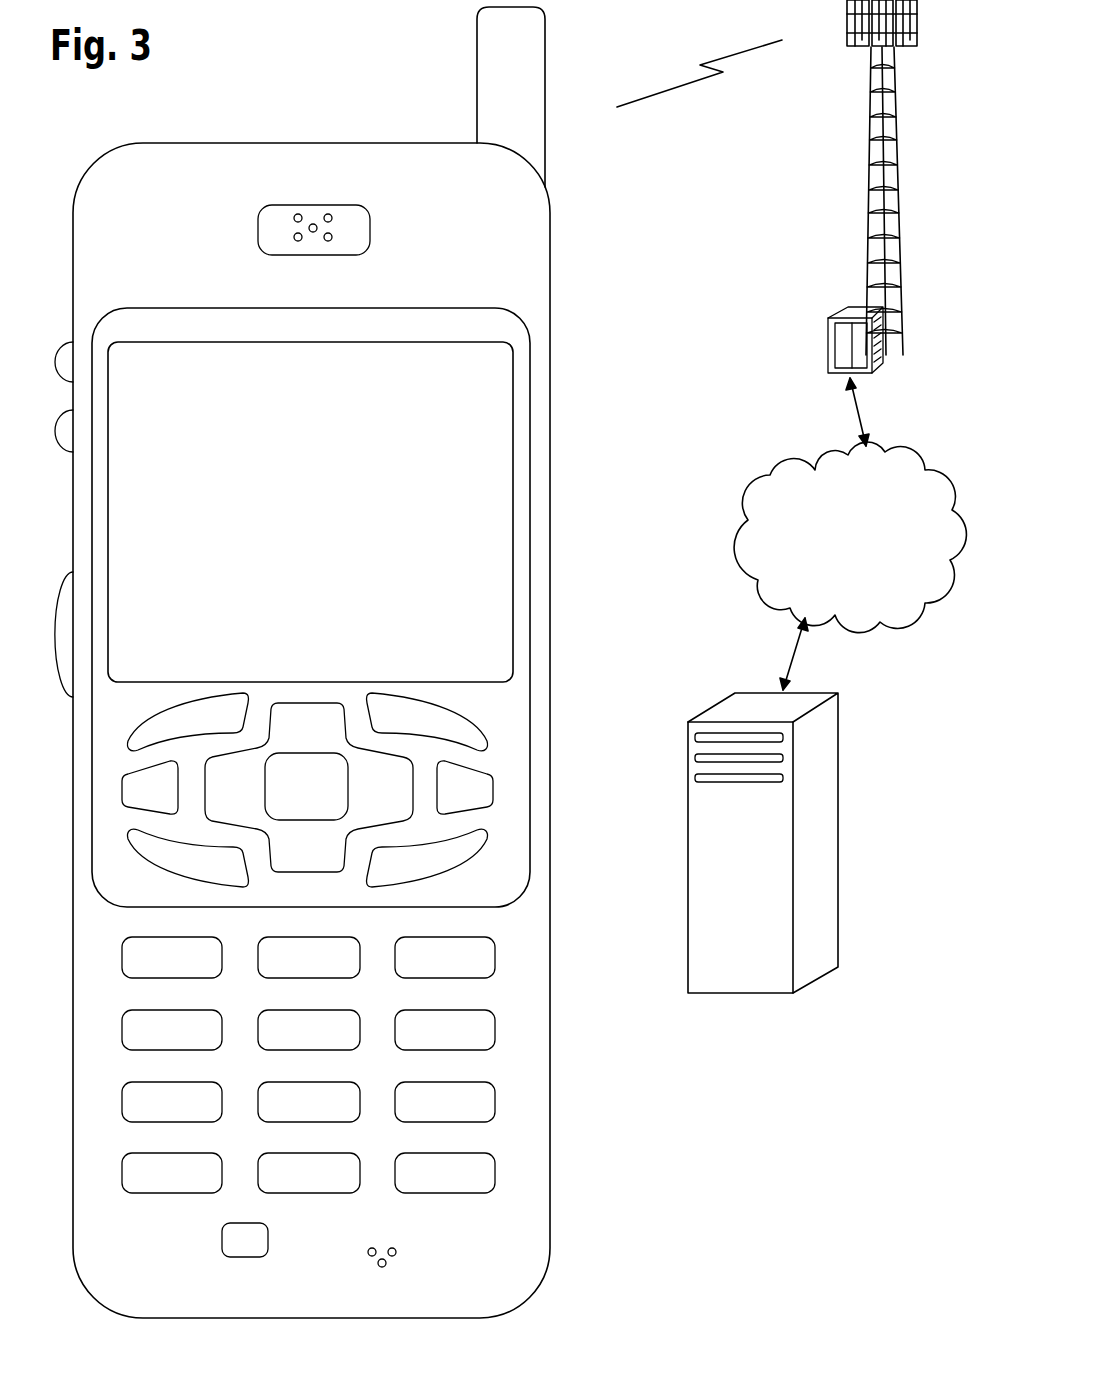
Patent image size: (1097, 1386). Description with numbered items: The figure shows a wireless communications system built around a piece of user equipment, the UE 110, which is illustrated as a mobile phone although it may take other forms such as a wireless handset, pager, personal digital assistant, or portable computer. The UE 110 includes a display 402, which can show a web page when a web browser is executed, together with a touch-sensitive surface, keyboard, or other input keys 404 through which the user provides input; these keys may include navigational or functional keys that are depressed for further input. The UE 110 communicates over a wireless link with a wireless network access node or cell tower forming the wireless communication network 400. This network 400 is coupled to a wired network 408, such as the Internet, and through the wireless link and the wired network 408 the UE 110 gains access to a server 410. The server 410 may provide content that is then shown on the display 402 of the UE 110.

The user equipment 110 is at (130, 1318).
The wireless communication network 400 is at (867, 202).
The display 402 is at (515, 358).
The input keys 404 is at (560, 692).
The wired network 408 is at (757, 596).
The server 410 is at (740, 993).